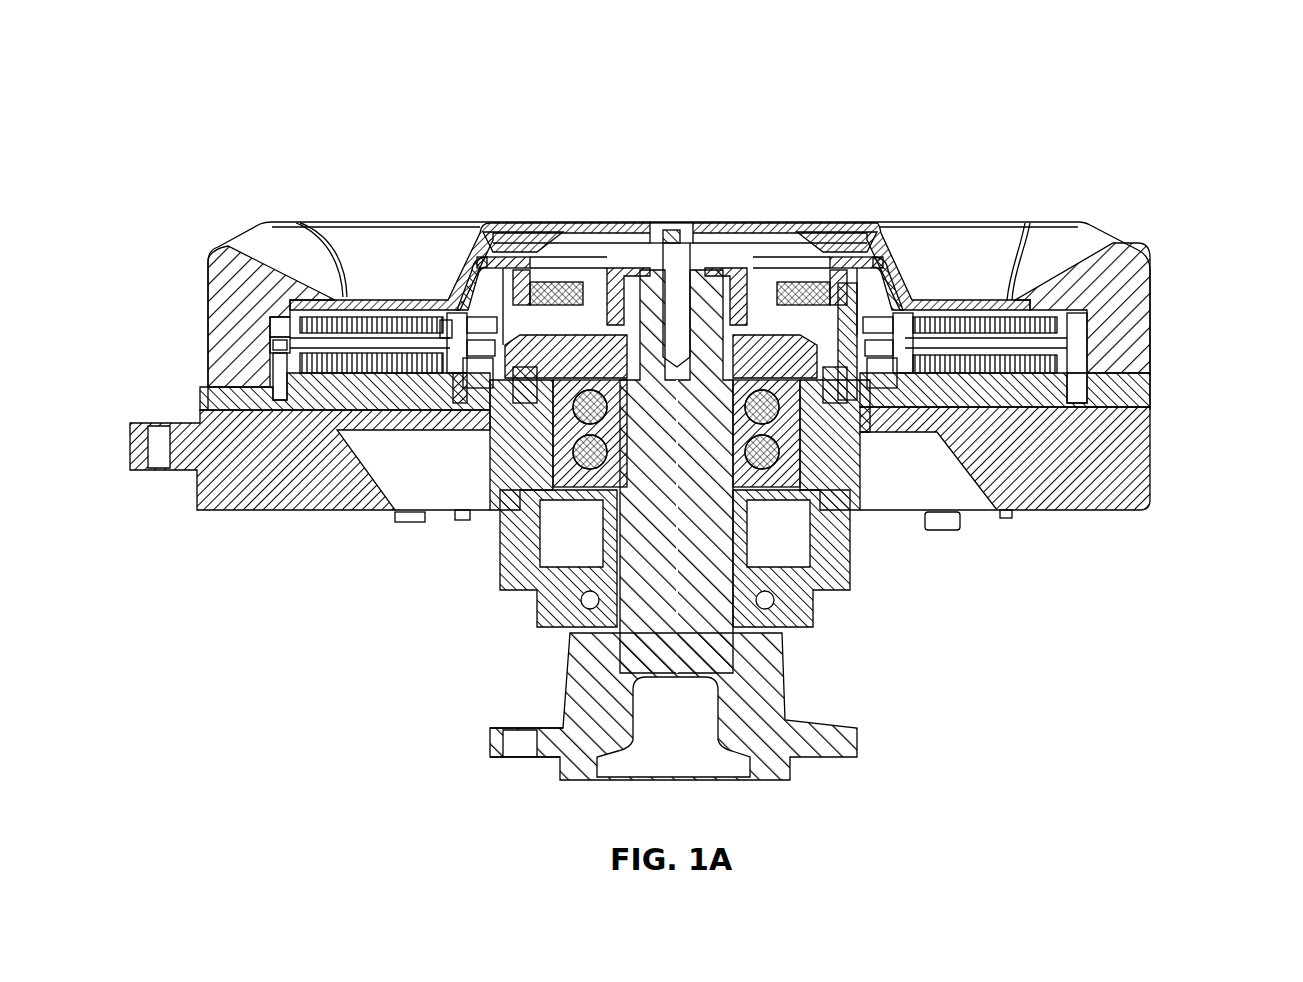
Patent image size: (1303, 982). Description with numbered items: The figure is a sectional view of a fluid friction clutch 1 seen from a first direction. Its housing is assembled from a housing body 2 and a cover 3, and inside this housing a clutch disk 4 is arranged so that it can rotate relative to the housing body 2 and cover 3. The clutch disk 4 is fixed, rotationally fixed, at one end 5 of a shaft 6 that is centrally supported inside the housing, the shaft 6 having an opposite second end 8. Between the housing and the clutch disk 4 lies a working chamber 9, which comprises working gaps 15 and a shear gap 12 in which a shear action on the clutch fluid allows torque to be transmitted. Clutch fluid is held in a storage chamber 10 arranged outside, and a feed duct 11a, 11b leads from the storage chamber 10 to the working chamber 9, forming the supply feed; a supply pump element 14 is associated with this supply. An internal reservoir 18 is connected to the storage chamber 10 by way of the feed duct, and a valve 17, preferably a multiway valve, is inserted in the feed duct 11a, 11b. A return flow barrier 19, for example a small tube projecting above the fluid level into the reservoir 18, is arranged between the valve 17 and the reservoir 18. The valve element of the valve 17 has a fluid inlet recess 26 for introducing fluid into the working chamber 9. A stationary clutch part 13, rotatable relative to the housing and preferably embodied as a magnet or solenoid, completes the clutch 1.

The fluid friction clutch 1 is at (1205, 170).
The housing body 2 is at (1138, 462).
The cover 3 is at (960, 250).
The clutch disk 4 is at (1045, 342).
The end of the shaft 5 is at (705, 275).
The shaft 6 is at (808, 667).
The second end of the shaft 8 is at (600, 713).
The working chamber 9 is at (370, 378).
The storage chamber 10 is at (272, 322).
The feed duct 11a is at (313, 345).
The feed duct 11b is at (1025, 378).
The shear gap 12 is at (277, 347).
The stationary clutch part 13 is at (755, 520).
The supply pump element 14 is at (275, 367).
The working gaps 15 is at (1000, 373).
The valve 17 is at (448, 330).
The internal reservoir 18 is at (483, 383).
The return flow barrier 19 is at (477, 343).
The fluid inlet recess 26 is at (905, 360).